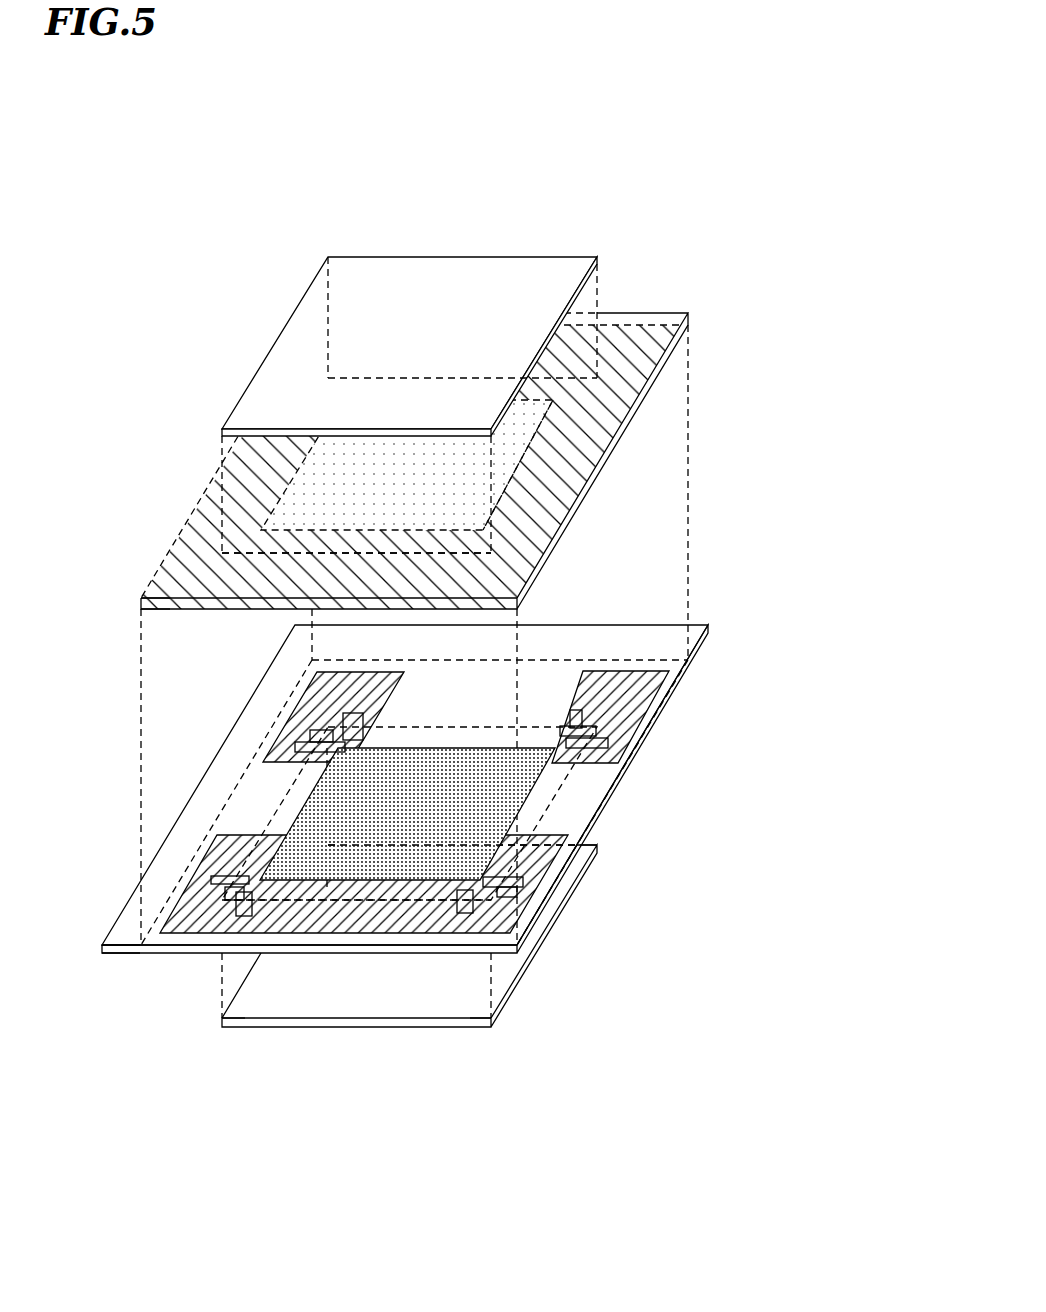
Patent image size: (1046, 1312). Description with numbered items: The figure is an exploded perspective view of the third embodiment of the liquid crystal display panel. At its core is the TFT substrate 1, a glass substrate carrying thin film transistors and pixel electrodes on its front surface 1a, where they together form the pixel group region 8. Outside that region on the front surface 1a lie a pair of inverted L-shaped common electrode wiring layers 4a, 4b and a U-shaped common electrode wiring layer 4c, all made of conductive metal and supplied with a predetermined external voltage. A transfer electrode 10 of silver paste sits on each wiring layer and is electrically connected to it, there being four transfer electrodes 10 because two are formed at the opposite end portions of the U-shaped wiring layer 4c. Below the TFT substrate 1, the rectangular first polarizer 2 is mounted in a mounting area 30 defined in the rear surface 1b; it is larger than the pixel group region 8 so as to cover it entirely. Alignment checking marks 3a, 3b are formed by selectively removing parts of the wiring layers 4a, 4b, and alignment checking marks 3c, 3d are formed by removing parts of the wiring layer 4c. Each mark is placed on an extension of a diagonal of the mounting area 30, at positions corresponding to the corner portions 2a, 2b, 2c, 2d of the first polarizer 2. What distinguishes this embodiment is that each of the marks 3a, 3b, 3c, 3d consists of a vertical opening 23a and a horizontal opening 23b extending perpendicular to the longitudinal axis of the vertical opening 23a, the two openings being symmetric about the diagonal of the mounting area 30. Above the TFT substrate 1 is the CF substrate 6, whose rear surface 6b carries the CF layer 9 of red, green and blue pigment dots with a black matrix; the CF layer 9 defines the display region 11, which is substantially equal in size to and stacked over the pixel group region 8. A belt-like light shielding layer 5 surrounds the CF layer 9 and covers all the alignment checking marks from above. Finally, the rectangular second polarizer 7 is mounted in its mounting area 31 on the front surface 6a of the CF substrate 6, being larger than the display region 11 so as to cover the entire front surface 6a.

The TFT substrate 1 is at (621, 638).
The front surface of the TFT substrate 1a is at (130, 935).
The rear surface of the TFT substrate 1b is at (130, 955).
The first polarizer 2 is at (390, 993).
The corner portion of the first polarizer 2a is at (327, 847).
The corner portion of the first polarizer 2b is at (593, 850).
The corner portion of the first polarizer 2c is at (493, 1022).
The corner portion of the first polarizer 2d is at (222, 1021).
The alignment checking mark 3a is at (222, 642).
The alignment checking mark 3b is at (763, 695).
The alignment checking mark 3c is at (470, 898).
The alignment checking mark 3d is at (238, 873).
The inverted L-shaped common electrode wiring layer 4a is at (323, 690).
The inverted L-shaped common electrode wiring layer 4b is at (645, 693).
The U-shaped common electrode wiring layer 4c is at (460, 915).
The light shielding layer 5 is at (643, 357).
The CF substrate 6 is at (648, 320).
The front surface of the CF substrate 6a is at (168, 586).
The rear surface of the CF substrate 6b is at (168, 610).
The second polarizer 7 is at (433, 267).
The pixel group region 8 is at (490, 797).
The CF layer 9 is at (522, 423).
The transfer electrode 10 is at (310, 752).
The display region 11 is at (527, 455).
The vertical opening 23a is at (357, 720).
The horizontal opening 23b is at (300, 743).
The mounting area 30 is at (357, 897).
The mounting area 31 is at (510, 520).